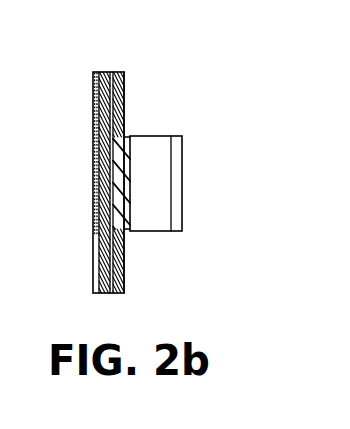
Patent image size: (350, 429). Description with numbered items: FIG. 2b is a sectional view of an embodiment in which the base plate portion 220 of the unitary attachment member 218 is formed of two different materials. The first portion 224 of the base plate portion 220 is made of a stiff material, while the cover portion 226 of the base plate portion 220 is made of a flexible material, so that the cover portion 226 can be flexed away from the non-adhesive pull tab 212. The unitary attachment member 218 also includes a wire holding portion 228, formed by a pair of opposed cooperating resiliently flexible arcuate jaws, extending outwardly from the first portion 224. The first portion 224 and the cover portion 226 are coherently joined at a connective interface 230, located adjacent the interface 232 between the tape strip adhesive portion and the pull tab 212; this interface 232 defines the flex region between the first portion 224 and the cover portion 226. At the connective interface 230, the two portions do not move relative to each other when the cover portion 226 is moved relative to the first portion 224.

The non-adhesive pull tab 212 is at (100, 282).
The unitary attachment member 218 is at (128, 92).
The base plate portion 220 is at (127, 80).
The first portion 224 is at (126, 126).
The cover portion 226 is at (120, 266).
The wire holding portion 228 is at (180, 144).
The connective interface 230 is at (120, 236).
The interface 232 is at (98, 236).